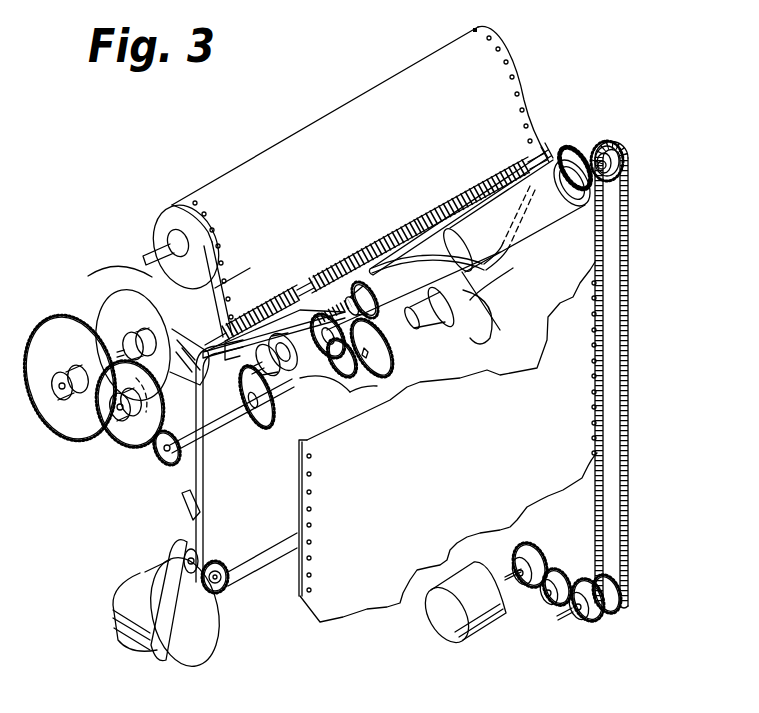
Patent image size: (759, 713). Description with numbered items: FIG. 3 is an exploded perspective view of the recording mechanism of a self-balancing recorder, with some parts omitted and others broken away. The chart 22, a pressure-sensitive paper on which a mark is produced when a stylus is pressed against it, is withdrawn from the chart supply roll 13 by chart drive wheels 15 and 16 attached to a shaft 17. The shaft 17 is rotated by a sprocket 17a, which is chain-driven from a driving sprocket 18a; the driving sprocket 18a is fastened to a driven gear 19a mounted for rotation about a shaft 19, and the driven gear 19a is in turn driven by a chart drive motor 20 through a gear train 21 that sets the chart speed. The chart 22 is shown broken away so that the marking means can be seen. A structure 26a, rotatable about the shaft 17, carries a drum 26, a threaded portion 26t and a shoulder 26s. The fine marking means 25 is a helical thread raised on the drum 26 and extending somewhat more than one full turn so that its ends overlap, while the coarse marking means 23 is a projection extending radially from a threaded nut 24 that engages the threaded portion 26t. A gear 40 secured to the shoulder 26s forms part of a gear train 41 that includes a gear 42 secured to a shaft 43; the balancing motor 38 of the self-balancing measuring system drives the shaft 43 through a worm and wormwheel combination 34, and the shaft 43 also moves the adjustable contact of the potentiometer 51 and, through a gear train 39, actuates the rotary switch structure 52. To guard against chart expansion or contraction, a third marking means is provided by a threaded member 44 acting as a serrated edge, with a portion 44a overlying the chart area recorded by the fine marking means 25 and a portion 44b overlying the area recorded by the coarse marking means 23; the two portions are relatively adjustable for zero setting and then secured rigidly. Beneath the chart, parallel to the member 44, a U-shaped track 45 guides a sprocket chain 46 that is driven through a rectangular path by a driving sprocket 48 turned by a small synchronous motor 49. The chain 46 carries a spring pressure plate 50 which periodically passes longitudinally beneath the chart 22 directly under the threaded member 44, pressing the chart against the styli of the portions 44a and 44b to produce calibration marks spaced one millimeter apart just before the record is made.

The chart supply roll 13 is at (323, 123).
The chart 22 is at (358, 607).
The chart drive wheel 16 is at (573, 152).
The shaft 17 is at (615, 150).
The sprocket 17a is at (607, 182).
The portion of threaded member 44a is at (461, 190).
The gear 40 is at (392, 250).
The threaded member 44 is at (331, 248).
The coarse marking means 23 is at (350, 262).
The threaded nut 24 is at (316, 297).
The drum 26 is at (549, 217).
The shoulder 26s is at (373, 305).
The structure 26a is at (548, 307).
The fine marking means 25 is at (475, 272).
The potentiometer 51 is at (460, 315).
The rotary switch structure 52 is at (103, 304).
The balancing motor 38 is at (188, 334).
The portion of threaded member 44b is at (268, 300).
The worm and wormwheel combination 34 is at (214, 399).
The chart drive wheel 15 is at (295, 372).
The gear 42 is at (324, 362).
The threaded portion 26t is at (386, 352).
The gear train 41 is at (381, 392).
The shaft 43 is at (222, 418).
The track 45 is at (249, 404).
The gear train 39 is at (116, 450).
The pressure plate 50 is at (187, 512).
The driving sprocket 48 is at (227, 555).
The sprocket chain 46 is at (268, 546).
The synchronous motor 49 is at (204, 626).
The gear train 21 is at (531, 603).
The chart drive motor 20 is at (478, 625).
The shaft 19 is at (558, 615).
The driven gear 19a is at (596, 620).
The driving sprocket 18a is at (621, 600).